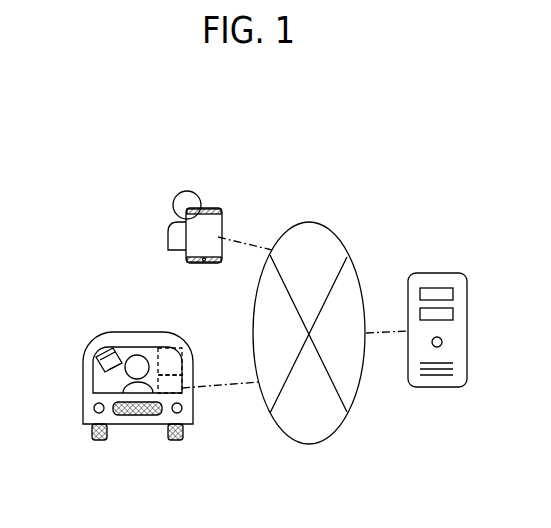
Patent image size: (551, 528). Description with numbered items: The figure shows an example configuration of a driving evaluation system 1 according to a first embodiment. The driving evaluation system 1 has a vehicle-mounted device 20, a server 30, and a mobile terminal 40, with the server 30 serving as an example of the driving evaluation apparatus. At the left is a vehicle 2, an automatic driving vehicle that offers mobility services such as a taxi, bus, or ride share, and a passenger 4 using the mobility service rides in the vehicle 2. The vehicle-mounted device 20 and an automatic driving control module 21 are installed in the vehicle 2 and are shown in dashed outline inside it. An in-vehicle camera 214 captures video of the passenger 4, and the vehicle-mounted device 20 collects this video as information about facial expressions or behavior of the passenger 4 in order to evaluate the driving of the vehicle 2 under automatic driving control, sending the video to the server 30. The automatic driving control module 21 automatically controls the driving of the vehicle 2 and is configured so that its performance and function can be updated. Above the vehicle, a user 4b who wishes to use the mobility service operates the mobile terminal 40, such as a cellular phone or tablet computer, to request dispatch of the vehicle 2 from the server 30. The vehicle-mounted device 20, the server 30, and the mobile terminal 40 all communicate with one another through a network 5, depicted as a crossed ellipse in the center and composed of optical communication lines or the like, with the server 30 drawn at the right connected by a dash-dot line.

The driving evaluation system 1 is at (408, 177).
The vehicle 2 is at (82, 407).
The passenger 4 is at (129, 356).
The user 4b is at (172, 205).
The network 5 is at (307, 222).
The vehicle-mounted device 20 is at (196, 372).
The automatic driving control module 21 is at (190, 352).
The server 30 is at (435, 273).
The mobile terminal 40 is at (210, 208).
The in-vehicle camera 214 is at (96, 356).